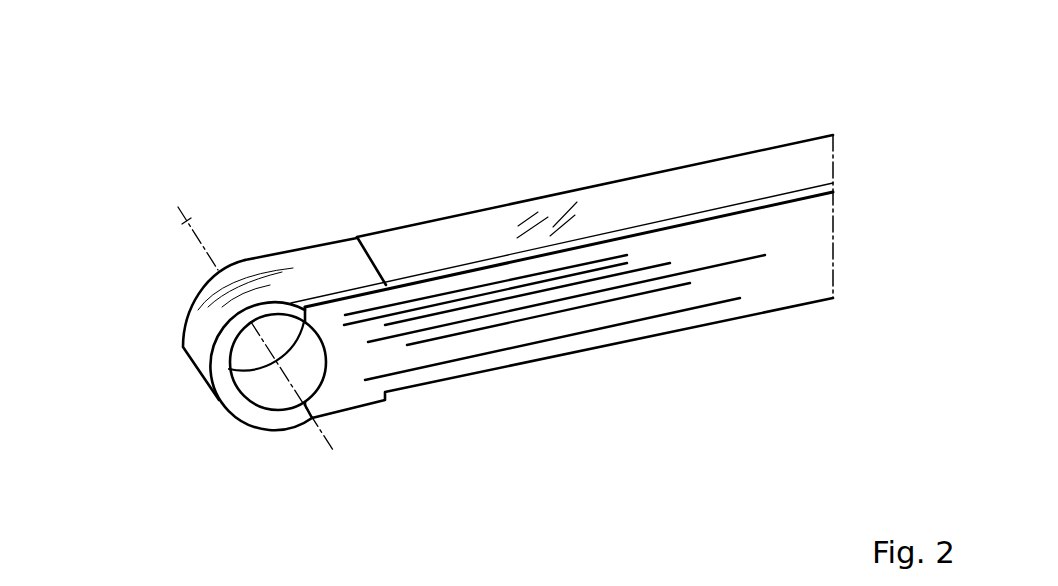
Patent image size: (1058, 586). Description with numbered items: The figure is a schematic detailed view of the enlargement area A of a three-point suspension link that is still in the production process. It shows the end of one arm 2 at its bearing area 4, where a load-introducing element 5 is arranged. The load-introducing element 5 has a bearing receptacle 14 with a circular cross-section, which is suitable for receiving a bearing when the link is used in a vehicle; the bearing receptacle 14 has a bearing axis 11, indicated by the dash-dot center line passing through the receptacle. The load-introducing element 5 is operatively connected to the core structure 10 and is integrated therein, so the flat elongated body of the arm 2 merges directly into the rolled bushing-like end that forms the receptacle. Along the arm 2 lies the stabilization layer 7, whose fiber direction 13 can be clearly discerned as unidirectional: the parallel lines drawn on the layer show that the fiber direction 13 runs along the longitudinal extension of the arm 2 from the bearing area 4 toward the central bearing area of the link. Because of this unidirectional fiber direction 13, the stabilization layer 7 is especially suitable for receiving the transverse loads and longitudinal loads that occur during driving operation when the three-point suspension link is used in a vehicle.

The enlargement area A is at (130, 126).
The arm 2 is at (487, 188).
The bearing area 4 is at (258, 226).
The load-introducing element 5 is at (311, 268).
The stabilization layer 7 is at (798, 256).
The core structure 10 is at (620, 203).
The bearing axis 11 is at (188, 222).
The fiber direction 13 is at (435, 296).
The bearing receptacle 14 is at (274, 402).